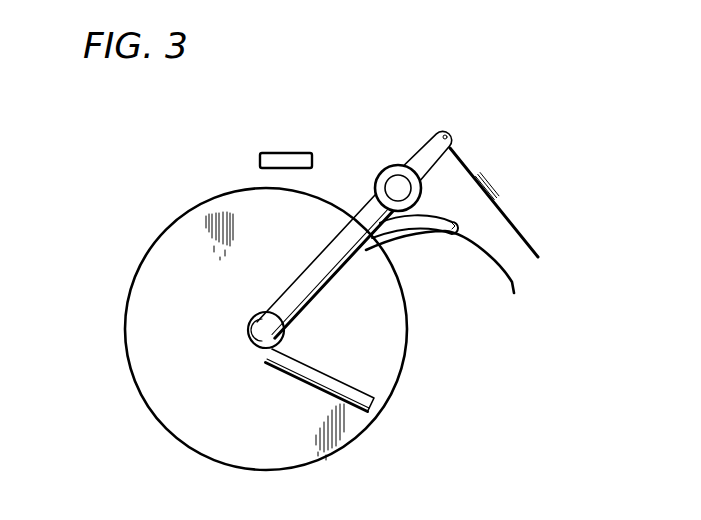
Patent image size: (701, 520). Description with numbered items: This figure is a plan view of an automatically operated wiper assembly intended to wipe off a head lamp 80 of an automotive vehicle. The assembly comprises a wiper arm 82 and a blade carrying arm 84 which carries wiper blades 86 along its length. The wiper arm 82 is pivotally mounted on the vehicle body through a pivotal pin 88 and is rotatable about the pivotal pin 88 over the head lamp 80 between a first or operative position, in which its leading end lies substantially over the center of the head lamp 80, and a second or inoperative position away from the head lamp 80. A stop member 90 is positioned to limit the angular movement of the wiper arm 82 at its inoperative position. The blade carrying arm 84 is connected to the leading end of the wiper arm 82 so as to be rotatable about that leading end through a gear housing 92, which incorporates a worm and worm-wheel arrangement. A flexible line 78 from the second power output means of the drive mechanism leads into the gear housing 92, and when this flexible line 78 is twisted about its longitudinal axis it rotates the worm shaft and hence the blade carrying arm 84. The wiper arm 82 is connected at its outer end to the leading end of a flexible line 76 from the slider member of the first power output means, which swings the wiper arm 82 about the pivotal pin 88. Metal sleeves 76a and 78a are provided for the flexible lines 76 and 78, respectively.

The flexible line 76 is at (515, 228).
The metal sleeve 76a is at (493, 192).
The flexible line 78 is at (517, 288).
The metal sleeve 78a is at (432, 235).
The head lamp 80 is at (133, 377).
The wiper arm 82 is at (331, 249).
The blade carrying arm 84 is at (342, 374).
The wiper blades 86 is at (313, 381).
The pivotal pin 88 is at (397, 180).
The stop member 90 is at (272, 153).
The gear housing 92 is at (258, 346).